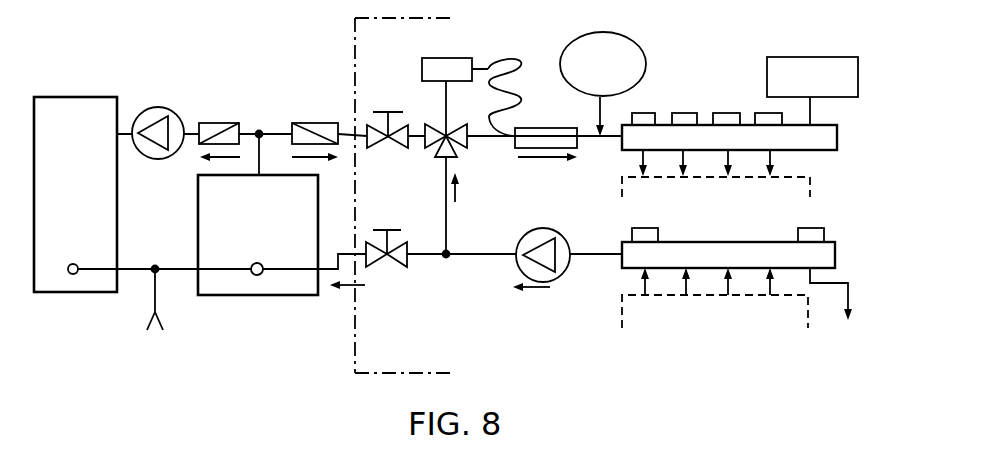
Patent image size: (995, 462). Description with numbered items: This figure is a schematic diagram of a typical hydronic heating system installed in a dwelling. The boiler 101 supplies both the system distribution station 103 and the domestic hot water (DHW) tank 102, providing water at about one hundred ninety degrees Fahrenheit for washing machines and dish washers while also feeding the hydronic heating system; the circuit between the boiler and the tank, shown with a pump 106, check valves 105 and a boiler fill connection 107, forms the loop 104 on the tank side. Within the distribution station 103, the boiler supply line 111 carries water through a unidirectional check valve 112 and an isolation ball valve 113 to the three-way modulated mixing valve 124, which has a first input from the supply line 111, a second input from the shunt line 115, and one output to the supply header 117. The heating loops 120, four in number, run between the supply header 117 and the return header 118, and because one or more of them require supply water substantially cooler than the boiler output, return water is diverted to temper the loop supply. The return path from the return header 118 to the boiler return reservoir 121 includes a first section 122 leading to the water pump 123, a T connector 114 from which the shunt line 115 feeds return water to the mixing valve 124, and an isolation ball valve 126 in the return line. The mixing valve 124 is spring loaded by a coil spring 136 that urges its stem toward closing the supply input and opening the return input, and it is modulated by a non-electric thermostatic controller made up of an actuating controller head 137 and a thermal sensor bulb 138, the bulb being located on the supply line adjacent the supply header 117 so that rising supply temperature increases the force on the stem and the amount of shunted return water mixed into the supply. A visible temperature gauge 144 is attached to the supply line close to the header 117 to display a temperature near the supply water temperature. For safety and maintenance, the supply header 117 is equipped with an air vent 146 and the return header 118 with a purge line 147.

The boiler 101 is at (198, 215).
The domestic hot water (DHW) tank 102 is at (88, 292).
The distribution station 103 is at (355, 62).
The primary heating loop 104 is at (192, 88).
The check valve 105 is at (214, 123).
The circulating pump 106 is at (150, 108).
The boiler fill connection 107 is at (158, 316).
The boiler supply line 111 is at (261, 132).
The unidirectional check valve 112 is at (308, 123).
The isolation ball valve 113 is at (390, 112).
The T connector 114 is at (448, 258).
The shunt line 115 is at (447, 222).
The supply header 117 is at (837, 142).
The return header 118 is at (835, 248).
The heating loops 120 is at (798, 209).
The boiler return reservoir 121 is at (259, 263).
The first section of return line 122 is at (585, 258).
The water pump 123 is at (552, 230).
The three-way modulated mixing valve 124 is at (462, 146).
The isolation ball valve 126 is at (385, 230).
The coil spring 136 is at (447, 58).
The actuating controller head 137 is at (528, 128).
The thermal sensor bulb 138 is at (517, 58).
The temperature gauge 144 is at (646, 52).
The air vent 146 is at (767, 78).
The purge line 147 is at (850, 292).